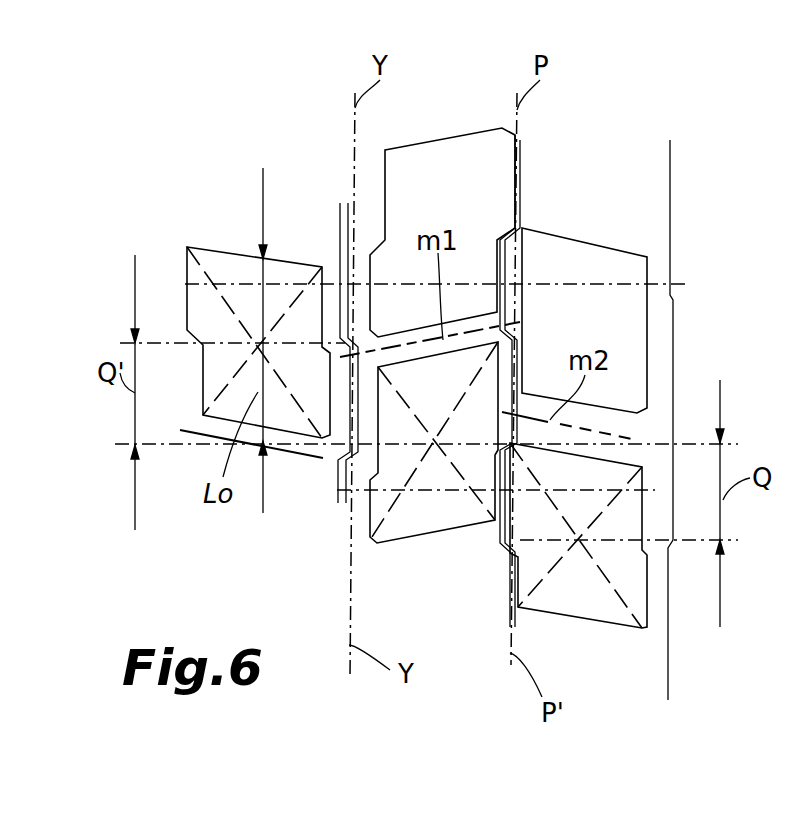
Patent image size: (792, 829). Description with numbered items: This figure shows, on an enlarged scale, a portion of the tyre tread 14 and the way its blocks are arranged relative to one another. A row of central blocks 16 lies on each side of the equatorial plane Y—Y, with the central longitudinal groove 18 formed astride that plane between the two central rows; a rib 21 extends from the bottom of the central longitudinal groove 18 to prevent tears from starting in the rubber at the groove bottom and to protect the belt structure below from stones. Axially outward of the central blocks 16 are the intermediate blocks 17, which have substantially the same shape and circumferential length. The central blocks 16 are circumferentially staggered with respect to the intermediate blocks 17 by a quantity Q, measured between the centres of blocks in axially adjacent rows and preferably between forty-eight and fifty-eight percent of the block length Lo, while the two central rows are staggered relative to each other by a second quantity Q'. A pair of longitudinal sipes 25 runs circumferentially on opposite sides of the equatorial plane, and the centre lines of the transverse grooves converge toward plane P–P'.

The tread 14 is at (572, 183).
The central blocks 16 is at (230, 265).
The intermediate blocks 17 is at (610, 267).
The central longitudinal groove 18 is at (326, 262).
The rib 21 is at (340, 482).
The longitudinal sipes 25 is at (493, 508).